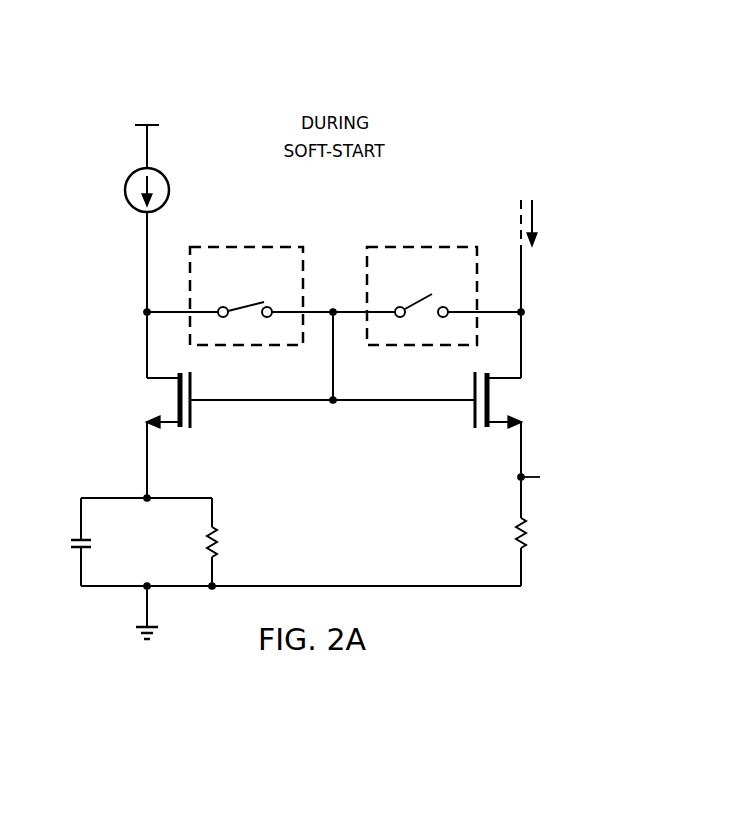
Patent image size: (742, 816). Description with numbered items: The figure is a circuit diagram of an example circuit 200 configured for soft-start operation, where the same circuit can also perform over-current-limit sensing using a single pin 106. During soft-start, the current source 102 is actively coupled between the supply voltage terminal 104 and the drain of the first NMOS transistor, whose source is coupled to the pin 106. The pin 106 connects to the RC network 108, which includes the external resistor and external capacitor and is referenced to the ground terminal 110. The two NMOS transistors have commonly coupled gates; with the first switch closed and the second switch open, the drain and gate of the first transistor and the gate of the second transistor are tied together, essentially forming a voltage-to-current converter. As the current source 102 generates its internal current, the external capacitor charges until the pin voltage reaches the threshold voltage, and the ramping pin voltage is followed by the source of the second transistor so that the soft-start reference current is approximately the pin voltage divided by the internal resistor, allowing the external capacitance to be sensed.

The circuit 200 is at (641, 312).
The supply voltage terminal 104 is at (142, 134).
The current source 102 is at (124, 192).
The pin 106 is at (144, 496).
The RC network 108 is at (70, 478).
The ground terminal 110 is at (137, 632).